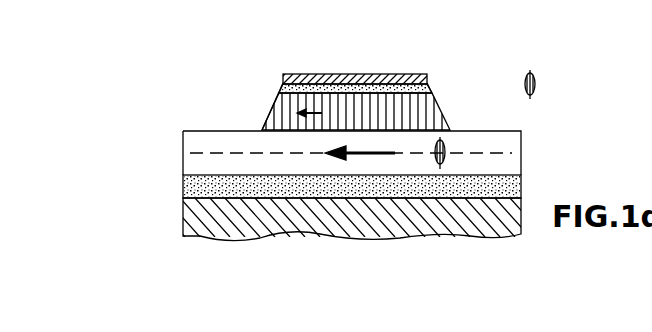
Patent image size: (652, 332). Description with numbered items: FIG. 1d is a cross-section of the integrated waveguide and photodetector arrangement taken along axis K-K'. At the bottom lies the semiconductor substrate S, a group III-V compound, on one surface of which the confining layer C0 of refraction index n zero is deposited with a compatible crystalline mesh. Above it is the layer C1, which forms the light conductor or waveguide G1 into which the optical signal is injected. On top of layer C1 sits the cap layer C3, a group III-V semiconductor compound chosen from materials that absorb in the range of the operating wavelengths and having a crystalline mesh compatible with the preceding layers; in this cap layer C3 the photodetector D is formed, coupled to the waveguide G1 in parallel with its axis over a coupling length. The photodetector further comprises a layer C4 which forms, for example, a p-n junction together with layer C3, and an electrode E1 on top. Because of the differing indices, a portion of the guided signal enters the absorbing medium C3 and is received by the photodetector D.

The semiconductor substrate S is at (498, 218).
The confining layer C0 is at (502, 183).
The layer C1 is at (506, 160).
The waveguide G1 is at (230, 162).
The photodetector D is at (280, 101).
The electrode E1 is at (375, 71).
The layer C4 is at (432, 88).
The cap layer C3 is at (425, 103).